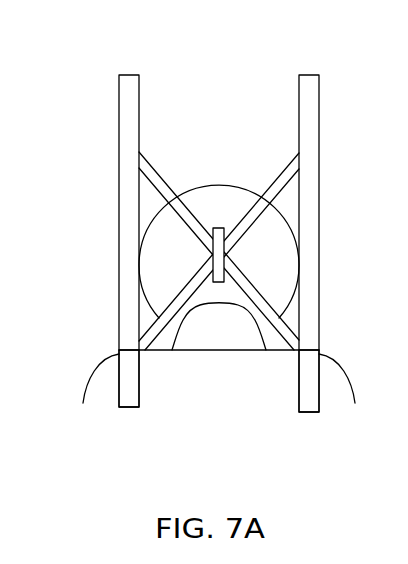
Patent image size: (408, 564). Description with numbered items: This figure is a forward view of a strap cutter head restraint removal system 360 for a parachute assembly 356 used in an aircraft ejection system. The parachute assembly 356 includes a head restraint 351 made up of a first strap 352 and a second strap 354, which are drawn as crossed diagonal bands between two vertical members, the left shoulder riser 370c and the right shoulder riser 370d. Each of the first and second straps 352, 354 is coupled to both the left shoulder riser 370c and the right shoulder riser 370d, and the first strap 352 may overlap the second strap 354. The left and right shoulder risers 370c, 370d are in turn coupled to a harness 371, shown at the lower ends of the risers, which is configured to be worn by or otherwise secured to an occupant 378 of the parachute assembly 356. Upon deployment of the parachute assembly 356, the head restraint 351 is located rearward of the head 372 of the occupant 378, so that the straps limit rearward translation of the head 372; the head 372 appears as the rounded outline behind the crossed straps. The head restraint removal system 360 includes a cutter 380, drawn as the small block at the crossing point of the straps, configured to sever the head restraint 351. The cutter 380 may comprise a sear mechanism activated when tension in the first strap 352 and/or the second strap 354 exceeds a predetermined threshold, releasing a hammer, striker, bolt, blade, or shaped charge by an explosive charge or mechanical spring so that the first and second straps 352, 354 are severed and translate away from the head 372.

The parachute assembly 356 is at (209, 227).
The left shoulder riser 370c is at (132, 151).
The right shoulder riser 370d is at (316, 172).
The harness 371 is at (302, 388).
The occupant 378 is at (88, 353).
The head 372 is at (223, 195).
The head restraint 351 is at (144, 220).
The first strap 352 is at (193, 223).
The head restraint removal system 360 is at (291, 210).
The second strap 354 is at (263, 203).
The cutter 380 is at (218, 259).